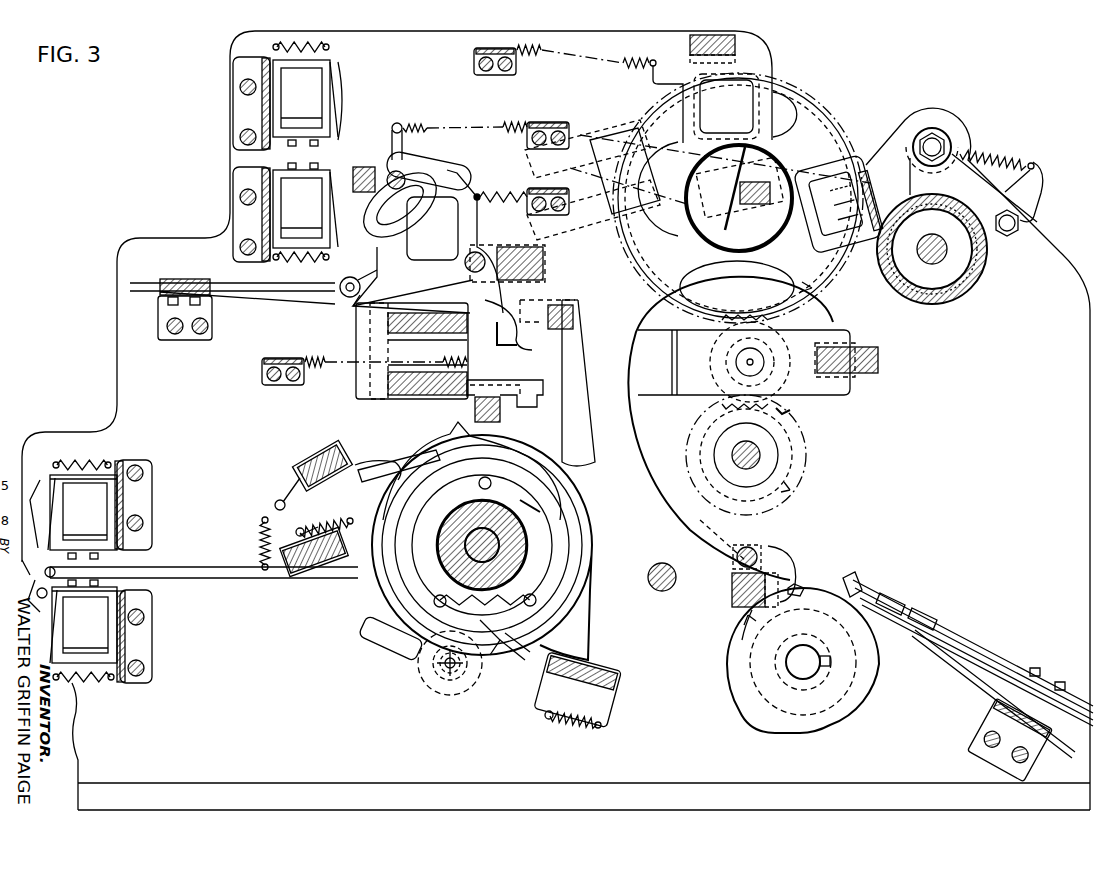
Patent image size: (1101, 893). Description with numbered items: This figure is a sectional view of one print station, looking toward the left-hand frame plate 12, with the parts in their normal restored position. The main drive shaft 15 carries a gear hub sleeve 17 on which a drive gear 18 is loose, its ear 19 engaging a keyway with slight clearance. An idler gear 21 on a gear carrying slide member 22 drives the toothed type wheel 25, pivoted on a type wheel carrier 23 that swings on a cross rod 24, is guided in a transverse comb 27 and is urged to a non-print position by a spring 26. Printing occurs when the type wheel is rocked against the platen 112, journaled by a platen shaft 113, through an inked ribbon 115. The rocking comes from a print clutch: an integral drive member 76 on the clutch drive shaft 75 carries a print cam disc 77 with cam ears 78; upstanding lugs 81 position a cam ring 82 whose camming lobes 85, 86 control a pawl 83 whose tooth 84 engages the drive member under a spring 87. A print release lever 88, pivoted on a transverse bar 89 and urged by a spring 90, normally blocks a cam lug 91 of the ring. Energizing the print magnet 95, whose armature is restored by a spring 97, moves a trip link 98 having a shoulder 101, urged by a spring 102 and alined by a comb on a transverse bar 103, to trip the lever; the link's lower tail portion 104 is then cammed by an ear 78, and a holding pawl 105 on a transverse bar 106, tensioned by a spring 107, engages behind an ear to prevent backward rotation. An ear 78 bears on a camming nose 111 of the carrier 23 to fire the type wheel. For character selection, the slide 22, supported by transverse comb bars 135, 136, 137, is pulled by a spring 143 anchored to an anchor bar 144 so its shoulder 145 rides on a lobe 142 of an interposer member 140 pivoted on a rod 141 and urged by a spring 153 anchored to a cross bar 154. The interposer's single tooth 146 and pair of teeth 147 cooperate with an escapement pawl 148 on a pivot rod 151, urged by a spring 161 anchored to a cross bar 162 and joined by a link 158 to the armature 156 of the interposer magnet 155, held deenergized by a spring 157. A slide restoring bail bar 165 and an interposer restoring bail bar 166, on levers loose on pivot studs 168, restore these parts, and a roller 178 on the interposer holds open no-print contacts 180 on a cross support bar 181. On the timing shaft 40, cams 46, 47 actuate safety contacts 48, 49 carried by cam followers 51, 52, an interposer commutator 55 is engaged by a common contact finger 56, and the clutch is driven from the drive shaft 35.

The left-hand frame plate 12 is at (992, 441).
The interposer magnet 155 is at (318, 90).
The spring 157 is at (322, 50).
The armature 156 is at (340, 110).
The link 158 is at (392, 142).
The pivot rod 151 is at (388, 172).
The escapement pawl 148 is at (460, 158).
The pair of teeth 147 is at (466, 185).
The interposer member 140 is at (468, 228).
The single tooth 146 is at (377, 256).
The spring 153 is at (507, 198).
The cross bar 154 is at (548, 215).
The cross bar 162 is at (556, 122).
The spring 161 is at (490, 126).
The spring 26 is at (530, 58).
The transverse comb 27 is at (690, 42).
The type wheel 25 is at (838, 124).
The inked ribbon 115 is at (760, 184).
The platen shaft 113 is at (945, 262).
The platen 112 is at (945, 288).
The cross support bar 181 is at (184, 296).
The no-print contacts 180 is at (308, 293).
The roller 178 is at (348, 298).
The anchor bar 144 is at (272, 358).
The spring 143 is at (318, 368).
The lobe 142 is at (505, 312).
The shoulder 145 is at (512, 342).
The rod 141 is at (481, 256).
The transverse comb bar 136 is at (558, 304).
The interposer restoring bail bar 166 is at (416, 334).
The slide restoring bail bar 165 is at (395, 395).
The transverse comb bar 137 is at (500, 400).
The transverse comb bar 135 is at (880, 360).
The type wheel carrier 23 is at (648, 530).
The gear carrying slide member 22 is at (655, 385).
The idler gear 21 is at (790, 398).
The ear 19 is at (712, 418).
The drive gear 18 is at (790, 414).
The gear hub sleeve 17 is at (778, 452).
The main drive shaft 15 is at (760, 465).
The cross rod 24 is at (757, 552).
The cam 46 is at (768, 585).
The cam 47 is at (800, 585).
The cam follower 51 is at (835, 590).
The cam follower 52 is at (852, 585).
The interposer commutator 55 is at (846, 690).
The timing shaft 40 is at (804, 674).
The safety contact 49 is at (918, 597).
The safety contact 48 is at (922, 612).
The common contact finger 56 is at (930, 668).
The drive shaft 35 is at (664, 592).
The clutch drive shaft 75 is at (440, 552).
The upstanding lugs 81 is at (410, 555).
The cam ring 82 is at (483, 465).
The pawl 83 is at (493, 480).
The cam ear 78 is at (460, 438).
The integral drive member 76 is at (555, 535).
The tooth 84 is at (530, 500).
The camming lobe 86 is at (540, 510).
The camming nose 111 is at (580, 455).
The cam lugs 91 is at (430, 441).
The camming lobe 85 is at (412, 472).
The print release lever 88 is at (372, 474).
The transverse bar 89 is at (305, 462).
The spring 90 is at (276, 500).
The transverse bar 103 is at (298, 570).
The spring 102 is at (262, 544).
The shoulder 101 is at (335, 565).
The trip link 98 is at (168, 565).
The spring 97 is at (90, 460).
The print magnet 95 is at (12, 487).
The lower tail portion 104 is at (398, 648).
The holding pawl 105 is at (592, 627).
The transverse bar 106 is at (605, 662).
The spring 107 is at (570, 728).
The spring 87 is at (518, 645).
The print cam disc 77 is at (496, 655).
The pivot studs 168 is at (455, 685).